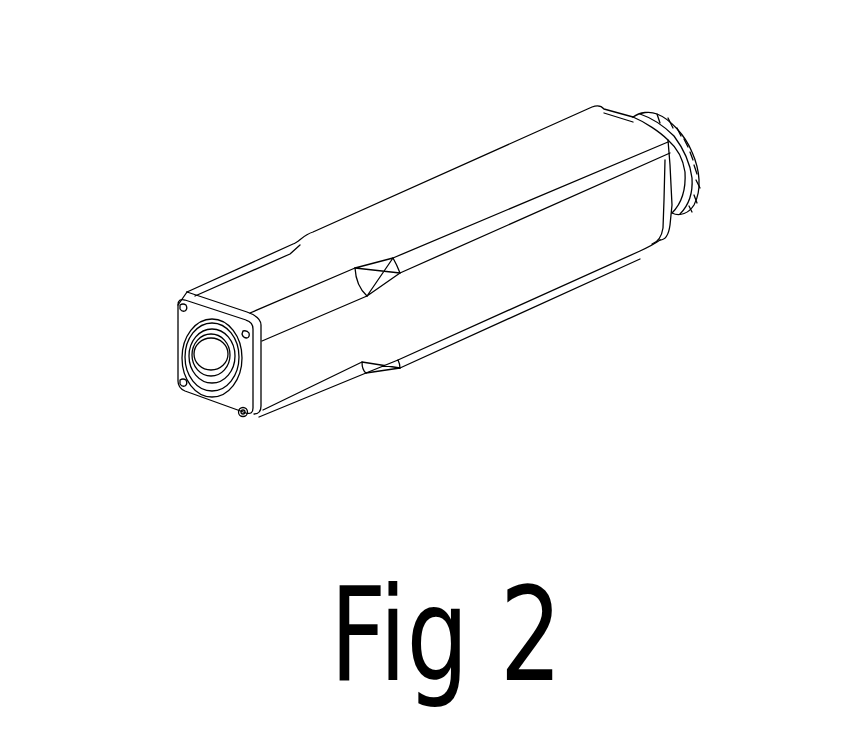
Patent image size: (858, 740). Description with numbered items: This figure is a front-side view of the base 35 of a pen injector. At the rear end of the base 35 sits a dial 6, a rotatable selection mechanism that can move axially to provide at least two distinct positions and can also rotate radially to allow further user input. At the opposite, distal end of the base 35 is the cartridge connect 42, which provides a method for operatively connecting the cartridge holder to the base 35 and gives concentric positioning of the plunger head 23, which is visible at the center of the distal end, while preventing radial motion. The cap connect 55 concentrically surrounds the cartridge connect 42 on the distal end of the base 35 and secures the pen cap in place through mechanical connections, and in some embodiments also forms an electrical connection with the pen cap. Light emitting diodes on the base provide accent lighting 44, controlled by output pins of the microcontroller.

The base 35 is at (408, 193).
The dial 6 is at (690, 127).
The cartridge connect 42 is at (173, 328).
The accent lighting 44 is at (187, 292).
The plunger head 23 is at (193, 391).
The cap connect 55 is at (247, 420).